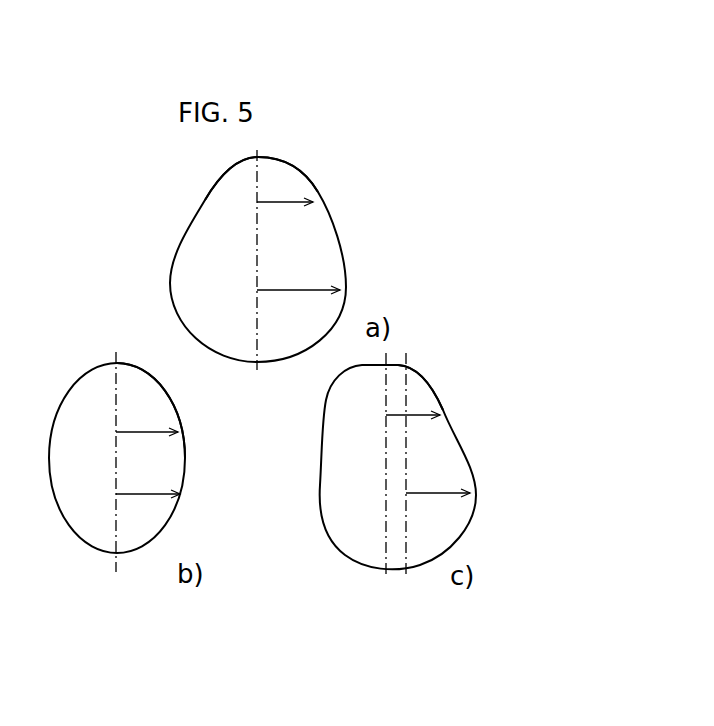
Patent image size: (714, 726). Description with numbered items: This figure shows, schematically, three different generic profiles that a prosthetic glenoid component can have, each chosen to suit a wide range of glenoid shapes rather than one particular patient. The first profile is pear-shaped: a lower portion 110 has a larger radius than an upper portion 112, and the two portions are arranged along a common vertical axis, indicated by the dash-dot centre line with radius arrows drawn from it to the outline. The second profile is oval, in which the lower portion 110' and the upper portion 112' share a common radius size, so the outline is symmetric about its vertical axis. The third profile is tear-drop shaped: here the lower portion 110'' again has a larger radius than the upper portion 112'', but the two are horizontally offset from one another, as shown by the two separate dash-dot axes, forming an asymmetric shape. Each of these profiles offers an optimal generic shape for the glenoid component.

The lower portion 110 is at (334, 260).
The upper portion 112 is at (338, 163).
The lower portion 110' is at (188, 462).
The upper portion 112' is at (216, 410).
The lower portion 110'' is at (474, 464).
The upper portion 112'' is at (469, 374).